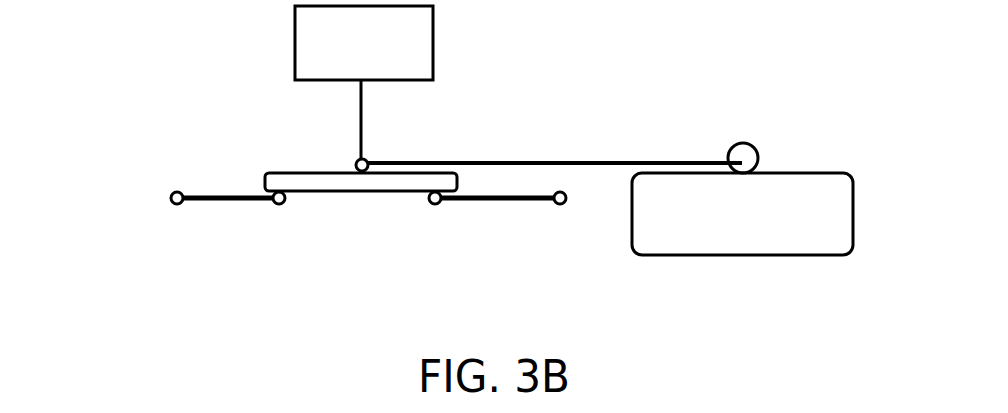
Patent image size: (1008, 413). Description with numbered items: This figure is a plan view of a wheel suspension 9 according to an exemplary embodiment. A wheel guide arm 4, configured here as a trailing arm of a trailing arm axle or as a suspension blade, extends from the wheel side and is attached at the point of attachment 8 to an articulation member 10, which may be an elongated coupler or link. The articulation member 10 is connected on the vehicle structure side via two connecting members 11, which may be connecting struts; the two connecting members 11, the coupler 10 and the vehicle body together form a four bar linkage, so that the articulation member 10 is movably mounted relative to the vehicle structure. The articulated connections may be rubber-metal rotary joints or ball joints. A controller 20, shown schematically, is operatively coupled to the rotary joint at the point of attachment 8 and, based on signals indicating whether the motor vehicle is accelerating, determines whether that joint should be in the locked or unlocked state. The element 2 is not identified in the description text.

The body / base member 2 is at (837, 220).
The wheel guide arm 4 is at (525, 162).
The point of attachment 8 is at (372, 157).
The wheel suspension 9 is at (133, 267).
The articulation member 10 is at (350, 192).
The connecting members 11 is at (238, 203).
The controller 20 is at (380, 46).